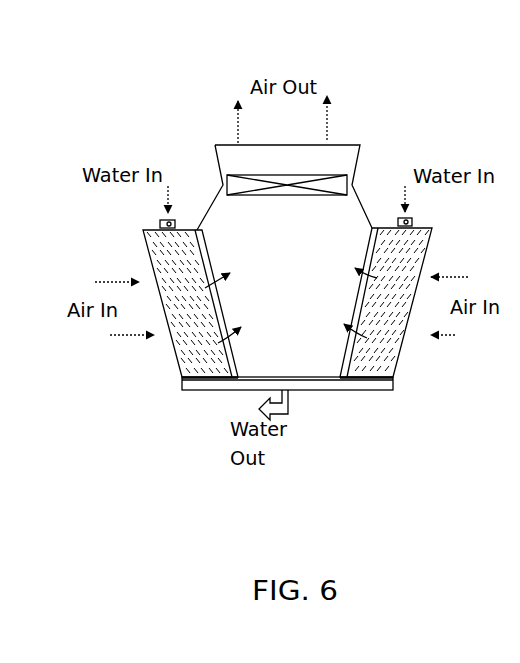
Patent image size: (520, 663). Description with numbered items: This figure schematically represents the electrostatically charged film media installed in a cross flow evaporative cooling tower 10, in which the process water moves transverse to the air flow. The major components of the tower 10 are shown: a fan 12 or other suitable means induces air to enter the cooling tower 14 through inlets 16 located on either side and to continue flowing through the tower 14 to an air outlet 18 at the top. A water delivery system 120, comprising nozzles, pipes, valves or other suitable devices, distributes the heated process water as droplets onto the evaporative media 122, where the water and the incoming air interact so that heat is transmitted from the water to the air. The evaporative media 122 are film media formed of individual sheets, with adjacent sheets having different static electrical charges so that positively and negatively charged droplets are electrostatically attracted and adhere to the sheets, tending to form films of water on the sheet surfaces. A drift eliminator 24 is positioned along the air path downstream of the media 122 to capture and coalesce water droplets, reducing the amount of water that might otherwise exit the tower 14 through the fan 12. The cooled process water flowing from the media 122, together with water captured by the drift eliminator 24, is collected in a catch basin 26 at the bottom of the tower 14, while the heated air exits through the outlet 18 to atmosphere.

The evaporative cooling tower 10 is at (132, 120).
The fan 12 is at (345, 163).
The cooling tower 14 is at (360, 166).
The inlet 16 is at (177, 360).
The air outlet 18 is at (230, 152).
The drift eliminator 24 is at (208, 253).
The catch basin 26 is at (313, 378).
The water delivery system 120 is at (160, 222).
The evaporative media 122 is at (202, 378).